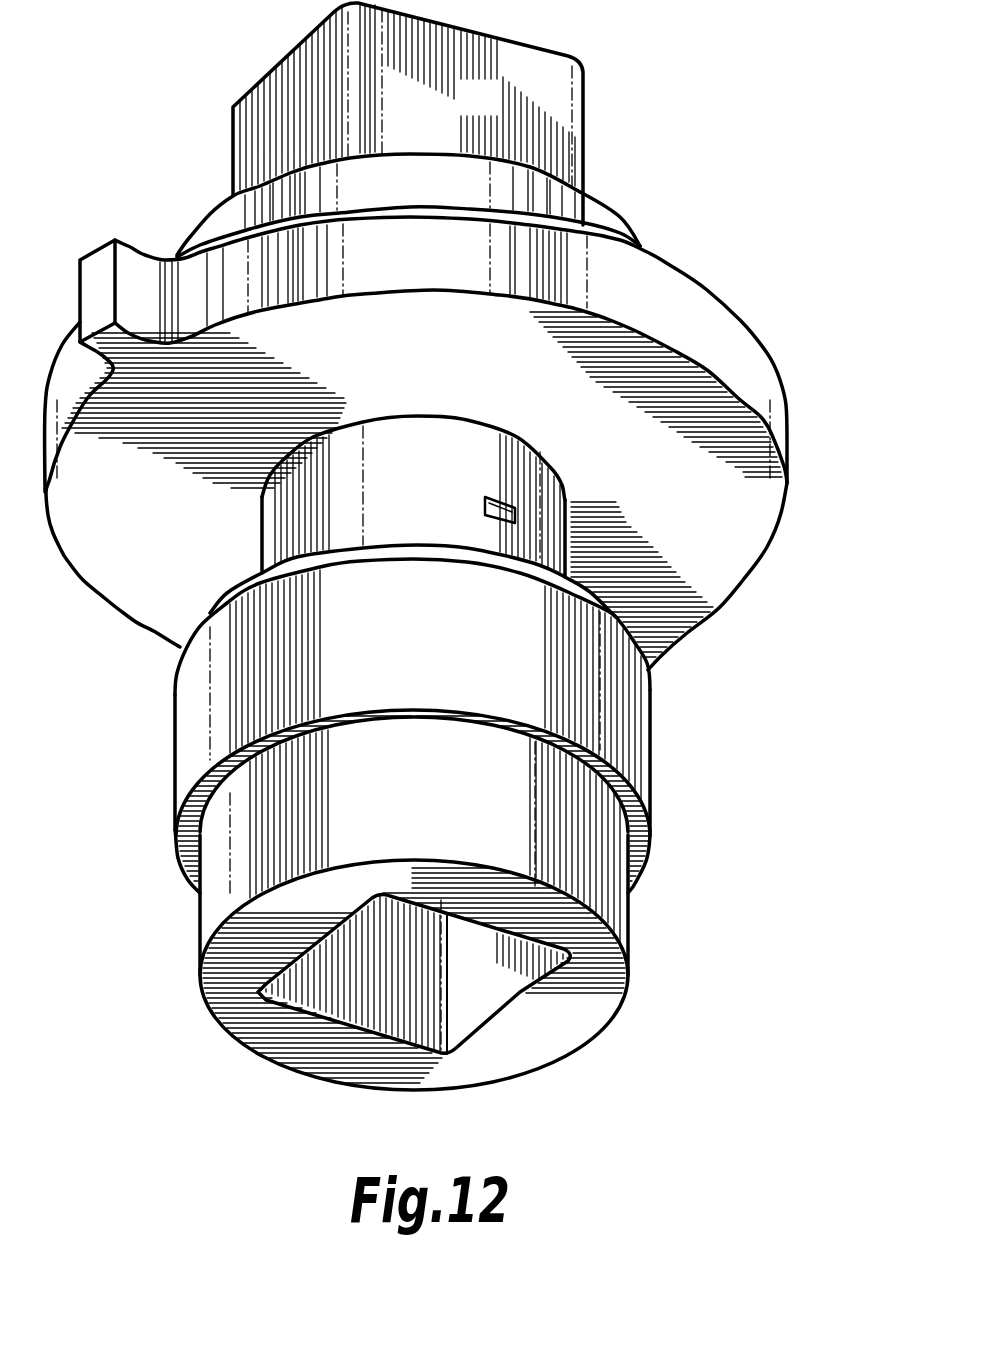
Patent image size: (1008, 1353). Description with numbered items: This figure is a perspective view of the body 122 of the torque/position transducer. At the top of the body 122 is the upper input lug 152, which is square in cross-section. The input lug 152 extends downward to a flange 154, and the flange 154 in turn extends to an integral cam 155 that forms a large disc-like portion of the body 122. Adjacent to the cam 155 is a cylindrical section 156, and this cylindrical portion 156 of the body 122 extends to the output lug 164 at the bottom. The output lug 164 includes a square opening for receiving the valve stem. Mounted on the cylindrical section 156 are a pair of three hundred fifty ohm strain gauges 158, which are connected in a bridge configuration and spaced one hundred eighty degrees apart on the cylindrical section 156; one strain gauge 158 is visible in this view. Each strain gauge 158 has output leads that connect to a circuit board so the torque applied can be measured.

The body 122 is at (447, 546).
The upper input lug 152 is at (497, 114).
The flange 154 is at (440, 198).
The integral cam 155 is at (448, 267).
The cylindrical section 156 is at (442, 512).
The strain gauge 158 is at (517, 511).
The output lug 164 is at (450, 807).